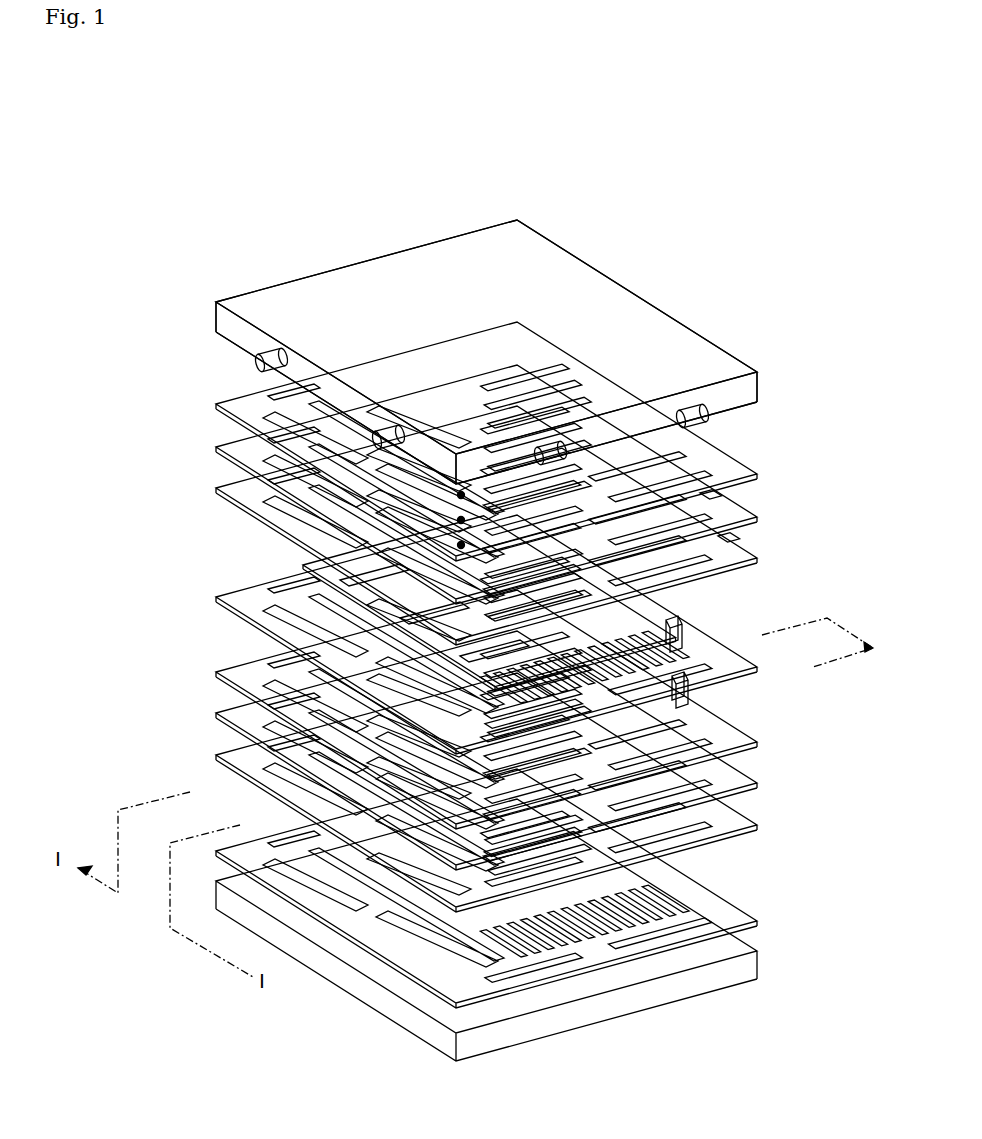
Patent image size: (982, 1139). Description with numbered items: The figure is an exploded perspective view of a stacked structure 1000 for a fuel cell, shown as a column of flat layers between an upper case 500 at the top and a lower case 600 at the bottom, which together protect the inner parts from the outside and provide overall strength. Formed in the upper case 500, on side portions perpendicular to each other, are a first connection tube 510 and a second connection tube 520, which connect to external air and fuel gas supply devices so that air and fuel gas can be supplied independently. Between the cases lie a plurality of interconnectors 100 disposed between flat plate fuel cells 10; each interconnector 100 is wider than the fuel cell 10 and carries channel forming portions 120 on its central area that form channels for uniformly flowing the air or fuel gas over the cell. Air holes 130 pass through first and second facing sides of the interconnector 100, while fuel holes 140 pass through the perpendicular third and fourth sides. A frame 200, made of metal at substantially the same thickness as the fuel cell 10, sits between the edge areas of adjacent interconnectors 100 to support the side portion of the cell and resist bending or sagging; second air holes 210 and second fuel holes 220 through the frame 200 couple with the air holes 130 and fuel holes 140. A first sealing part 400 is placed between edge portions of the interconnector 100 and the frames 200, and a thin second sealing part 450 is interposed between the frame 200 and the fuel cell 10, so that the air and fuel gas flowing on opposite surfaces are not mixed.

The stacked structure 1000 is at (527, 80).
The upper case 500 is at (627, 318).
The first connection tube 510 is at (266, 350).
The second connection tube 520 is at (702, 406).
The first sealing part 400 is at (225, 440).
The frame 200 is at (225, 487).
The second air hole 210 is at (717, 497).
The second fuel hole 220 is at (717, 548).
The fuel cell 10 is at (300, 553).
The channel forming portion 120 is at (300, 572).
The air hole 130 is at (680, 612).
The interconnector 100 is at (230, 612).
The fuel hole 140 is at (686, 678).
The second sealing part 450 is at (212, 668).
The lower case 600 is at (542, 1027).